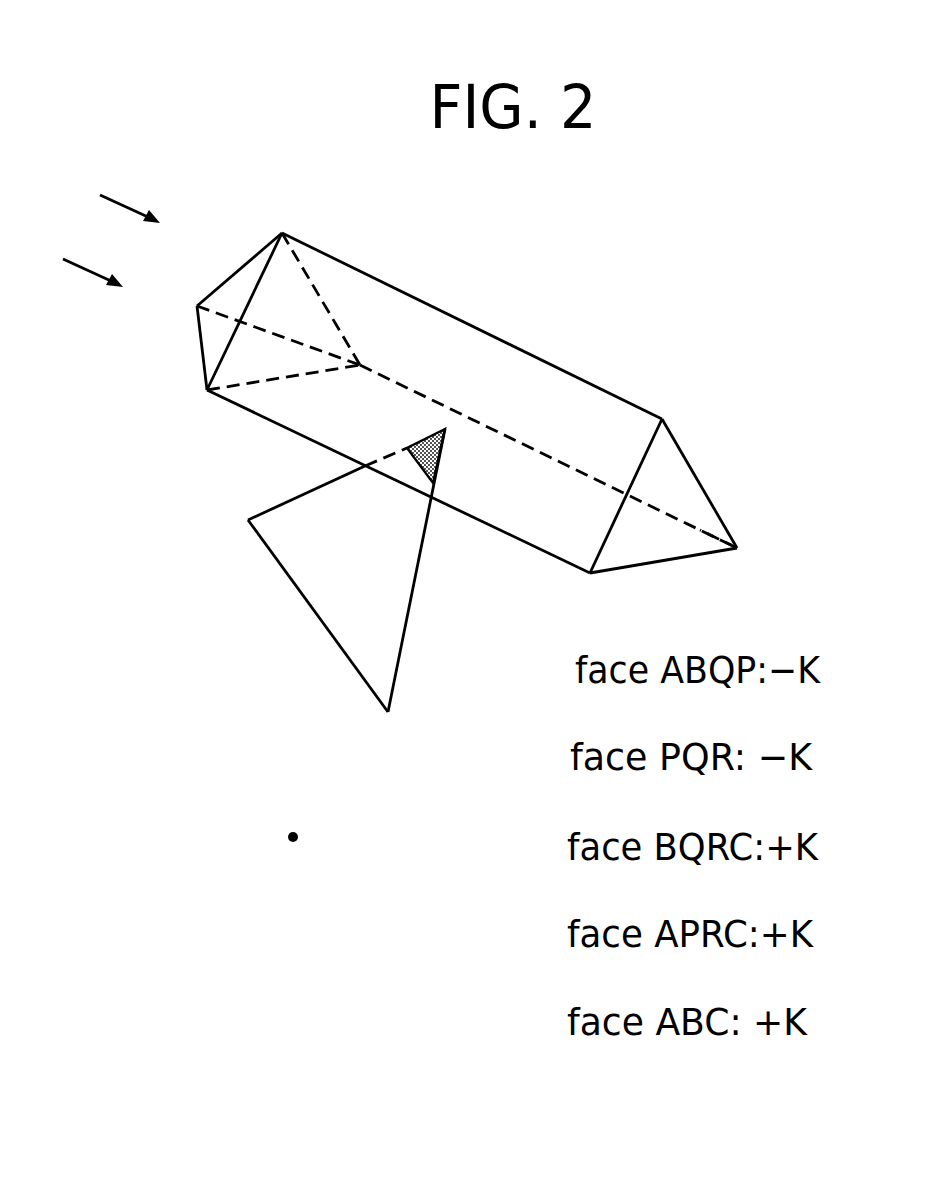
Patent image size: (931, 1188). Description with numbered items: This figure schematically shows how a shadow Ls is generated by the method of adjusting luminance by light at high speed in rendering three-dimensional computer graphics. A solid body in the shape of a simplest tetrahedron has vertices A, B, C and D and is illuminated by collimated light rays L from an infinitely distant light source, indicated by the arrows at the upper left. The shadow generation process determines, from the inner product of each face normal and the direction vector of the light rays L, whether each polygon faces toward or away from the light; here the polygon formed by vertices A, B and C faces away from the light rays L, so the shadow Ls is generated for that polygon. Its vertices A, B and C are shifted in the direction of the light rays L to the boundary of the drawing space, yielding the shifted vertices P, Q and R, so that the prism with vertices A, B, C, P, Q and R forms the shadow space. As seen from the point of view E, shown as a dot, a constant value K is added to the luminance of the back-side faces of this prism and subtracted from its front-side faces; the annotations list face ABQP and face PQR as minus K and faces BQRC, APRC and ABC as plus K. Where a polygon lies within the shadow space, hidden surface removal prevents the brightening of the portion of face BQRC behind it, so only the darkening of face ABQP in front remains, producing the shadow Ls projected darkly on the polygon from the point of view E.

The collimated light rays L is at (111, 241).
The vertex A is at (429, 304).
The vertex B is at (382, 439).
The vertex C is at (472, 390).
The vertex D is at (265, 322).
The vertex P is at (663, 472).
The vertex Q is at (656, 585).
The vertex R is at (734, 555).
The shadow Ls is at (445, 458).
The point of view E is at (310, 836).